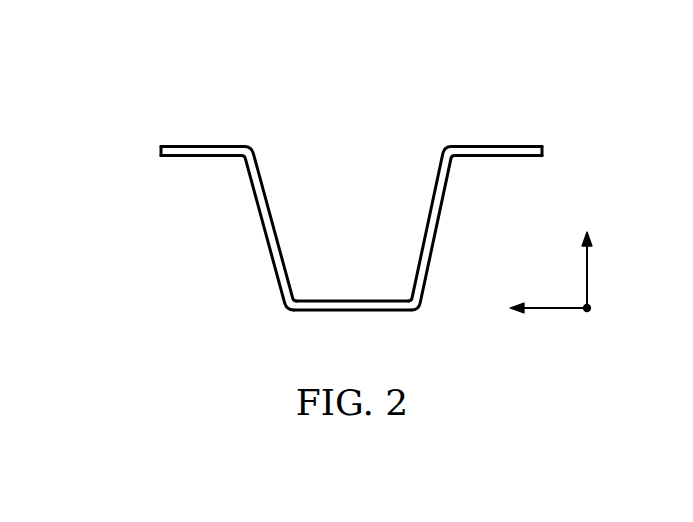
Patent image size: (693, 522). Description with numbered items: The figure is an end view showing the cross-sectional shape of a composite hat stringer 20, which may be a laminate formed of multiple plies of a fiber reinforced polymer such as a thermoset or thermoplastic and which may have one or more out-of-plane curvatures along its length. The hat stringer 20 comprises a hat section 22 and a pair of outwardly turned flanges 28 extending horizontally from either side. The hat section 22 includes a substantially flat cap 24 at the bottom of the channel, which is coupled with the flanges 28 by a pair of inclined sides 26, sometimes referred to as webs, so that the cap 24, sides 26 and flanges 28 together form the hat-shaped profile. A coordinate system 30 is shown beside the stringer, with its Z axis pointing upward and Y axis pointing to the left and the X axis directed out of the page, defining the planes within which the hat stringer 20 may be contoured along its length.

The hat stringer 20 is at (287, 102).
The hat section 22 is at (250, 278).
The cap 24 is at (352, 312).
The inclined sides 26 is at (265, 227).
The flanges 28 is at (203, 143).
The coordinate system 30 is at (627, 223).